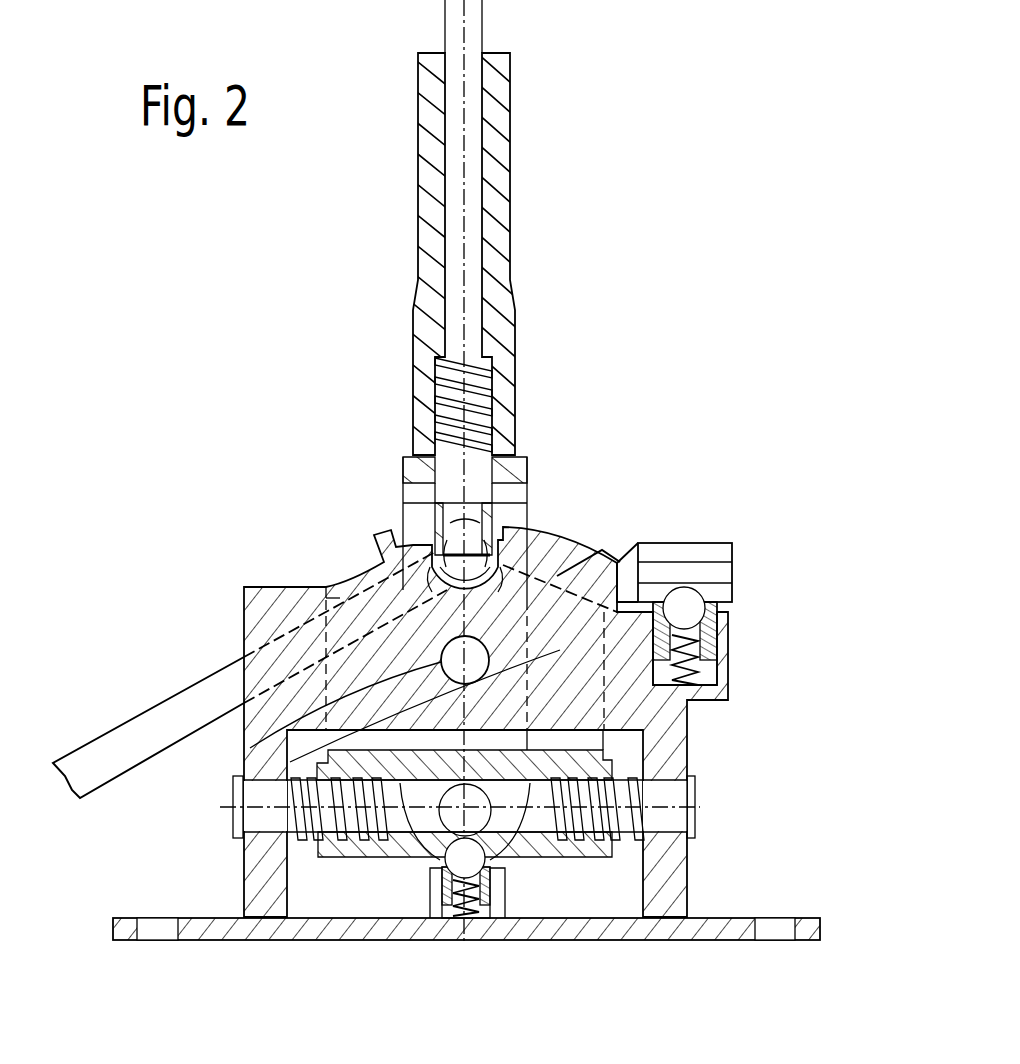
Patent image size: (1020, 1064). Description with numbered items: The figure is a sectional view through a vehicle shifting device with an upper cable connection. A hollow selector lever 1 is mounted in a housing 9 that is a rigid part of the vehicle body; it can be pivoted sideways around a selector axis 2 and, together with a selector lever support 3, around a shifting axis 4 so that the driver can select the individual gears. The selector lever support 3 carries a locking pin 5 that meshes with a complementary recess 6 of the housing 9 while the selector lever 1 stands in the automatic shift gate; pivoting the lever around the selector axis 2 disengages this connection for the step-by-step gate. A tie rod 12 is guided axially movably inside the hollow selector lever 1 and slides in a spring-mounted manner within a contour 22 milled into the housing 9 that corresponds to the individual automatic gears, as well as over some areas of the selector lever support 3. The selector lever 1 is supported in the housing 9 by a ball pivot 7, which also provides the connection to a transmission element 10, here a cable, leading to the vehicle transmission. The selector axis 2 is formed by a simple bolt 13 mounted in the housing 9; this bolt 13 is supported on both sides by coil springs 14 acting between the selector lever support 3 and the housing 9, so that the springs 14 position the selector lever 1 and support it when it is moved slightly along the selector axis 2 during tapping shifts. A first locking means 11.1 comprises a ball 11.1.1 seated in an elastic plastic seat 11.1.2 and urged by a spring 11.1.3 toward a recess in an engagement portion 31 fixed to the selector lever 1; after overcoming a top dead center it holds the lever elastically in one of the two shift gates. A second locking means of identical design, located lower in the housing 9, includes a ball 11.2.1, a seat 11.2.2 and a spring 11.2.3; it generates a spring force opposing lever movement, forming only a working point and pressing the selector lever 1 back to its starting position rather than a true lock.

The selector lever 1 is at (500, 298).
The selector axis 2 is at (700, 806).
The selector lever support 3 is at (612, 770).
The shifting axis 4 is at (438, 818).
The locking pin 5 is at (262, 742).
The recess 6 is at (300, 715).
The ball pivot 7 is at (455, 548).
The housing 9 is at (673, 897).
The transmission element 10 is at (173, 707).
The tie rod 12 is at (480, 472).
The bolt 13 is at (675, 818).
The coil springs 14 is at (235, 818).
The contour 22 is at (505, 522).
The engagement portion 31 is at (684, 572).
The first locking means 11.1 is at (742, 565).
The ball 11.1.1 is at (693, 600).
The seat 11.1.2 is at (718, 625).
The spring 11.1.3 is at (700, 665).
The ball 11.2.1 is at (445, 864).
The seat 11.2.2 is at (493, 890).
The spring 11.2.3 is at (448, 920).